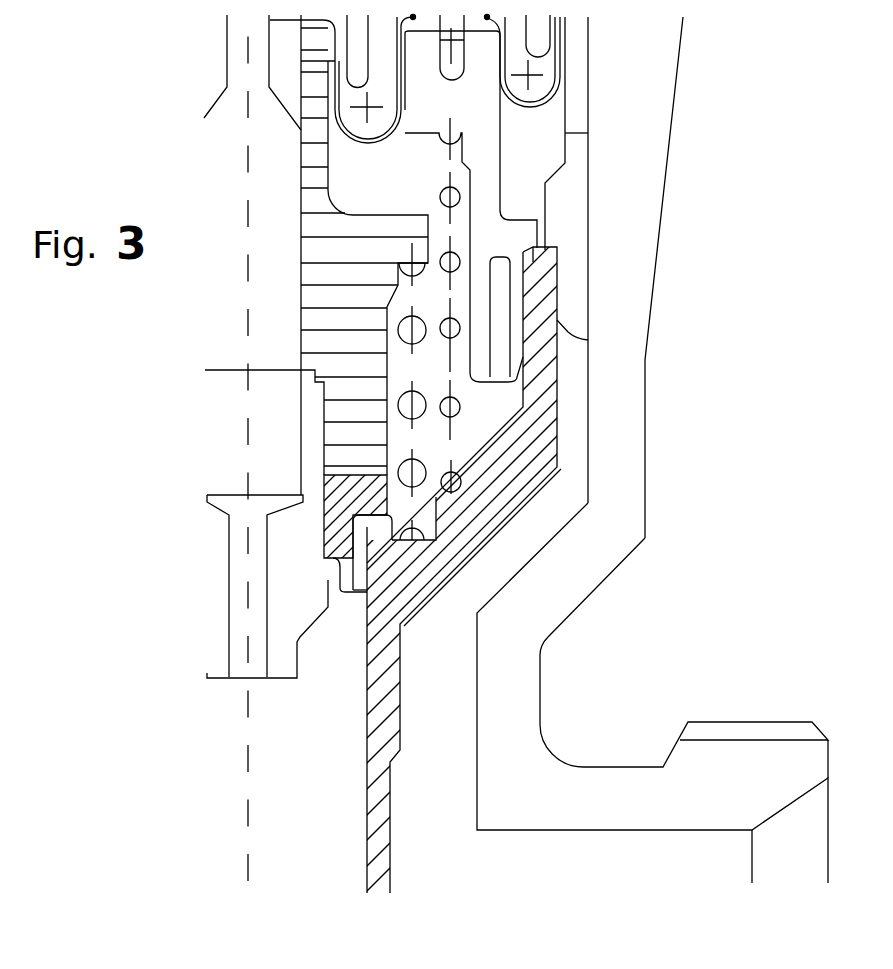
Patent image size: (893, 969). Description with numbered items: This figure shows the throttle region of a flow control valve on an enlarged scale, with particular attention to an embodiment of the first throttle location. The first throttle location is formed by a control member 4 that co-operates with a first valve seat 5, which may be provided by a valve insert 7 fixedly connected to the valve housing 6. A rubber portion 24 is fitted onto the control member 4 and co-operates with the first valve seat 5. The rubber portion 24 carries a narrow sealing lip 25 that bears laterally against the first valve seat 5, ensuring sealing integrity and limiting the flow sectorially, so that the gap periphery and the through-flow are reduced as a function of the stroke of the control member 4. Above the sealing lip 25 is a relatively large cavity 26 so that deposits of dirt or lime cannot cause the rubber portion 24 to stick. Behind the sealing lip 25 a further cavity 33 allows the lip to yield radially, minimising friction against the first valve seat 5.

The control member 4 is at (395, 243).
The first valve seat 5 is at (382, 561).
The valve housing 6 is at (652, 108).
The valve insert 7 is at (530, 458).
The rubber portion 24 is at (323, 512).
The sealing lip 25 is at (347, 593).
The cavity 26 is at (365, 558).
The further cavity 33 is at (333, 578).